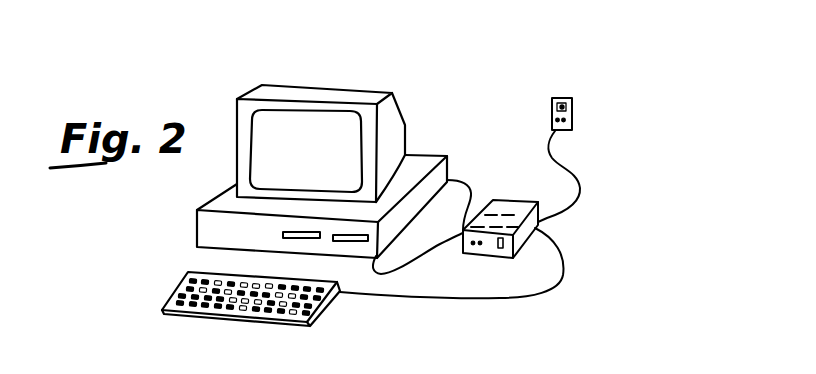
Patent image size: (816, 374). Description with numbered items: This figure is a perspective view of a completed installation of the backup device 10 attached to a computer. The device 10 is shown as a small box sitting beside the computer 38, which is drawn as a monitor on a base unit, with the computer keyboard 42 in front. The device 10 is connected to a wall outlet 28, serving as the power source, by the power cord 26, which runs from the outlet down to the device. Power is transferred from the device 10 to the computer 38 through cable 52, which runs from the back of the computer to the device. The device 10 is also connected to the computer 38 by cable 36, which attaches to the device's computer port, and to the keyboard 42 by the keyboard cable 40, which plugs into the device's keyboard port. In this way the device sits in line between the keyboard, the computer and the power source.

The device 10 is at (580, 231).
The power cord 26 is at (571, 166).
The wall outlet 28 is at (572, 111).
The cable 36 is at (410, 259).
The computer 38 is at (420, 82).
The keyboard cable 40 is at (558, 282).
The computer keyboard 42 is at (318, 316).
The cable 52 is at (447, 180).